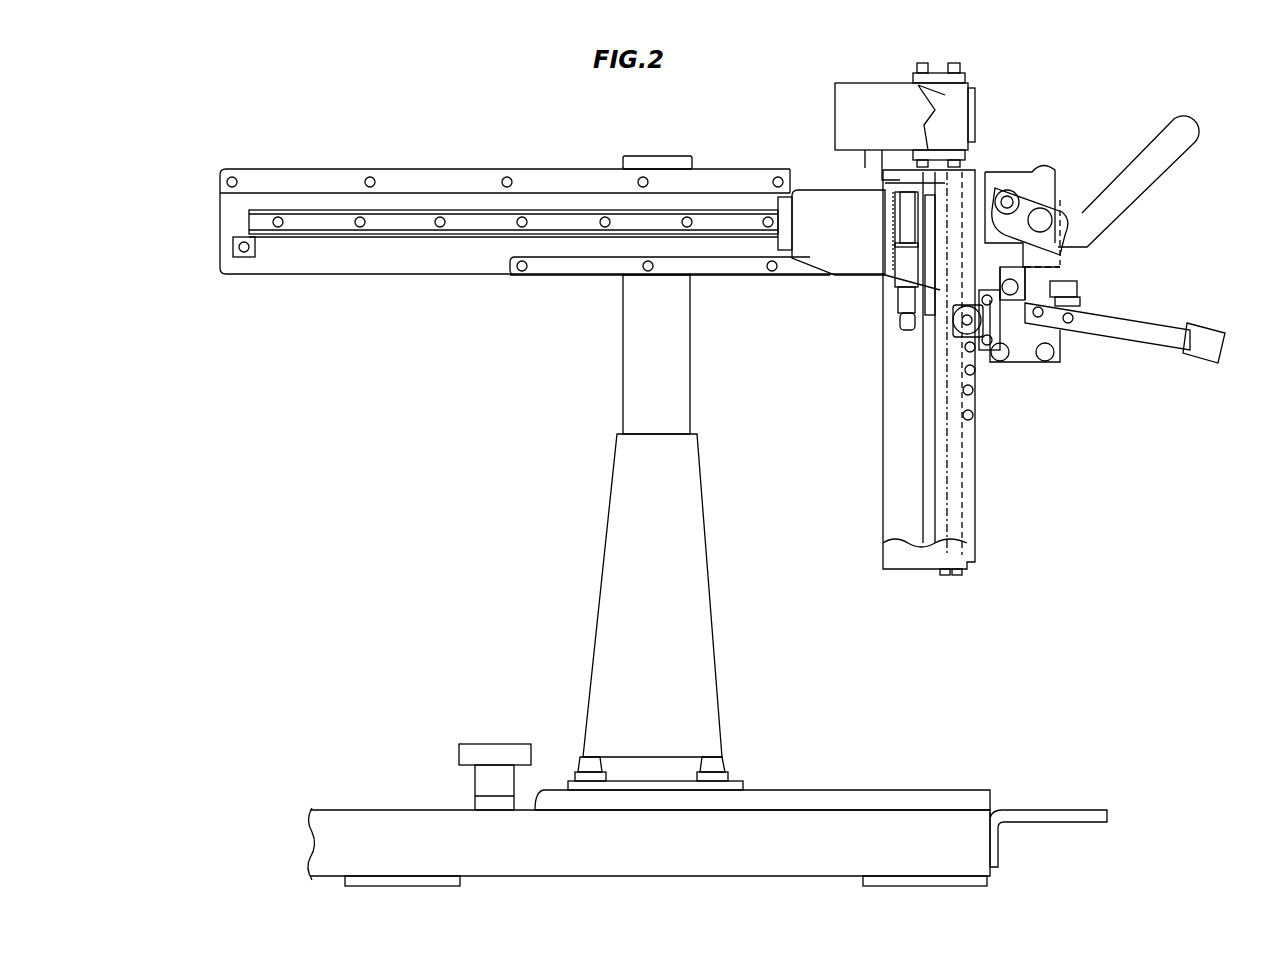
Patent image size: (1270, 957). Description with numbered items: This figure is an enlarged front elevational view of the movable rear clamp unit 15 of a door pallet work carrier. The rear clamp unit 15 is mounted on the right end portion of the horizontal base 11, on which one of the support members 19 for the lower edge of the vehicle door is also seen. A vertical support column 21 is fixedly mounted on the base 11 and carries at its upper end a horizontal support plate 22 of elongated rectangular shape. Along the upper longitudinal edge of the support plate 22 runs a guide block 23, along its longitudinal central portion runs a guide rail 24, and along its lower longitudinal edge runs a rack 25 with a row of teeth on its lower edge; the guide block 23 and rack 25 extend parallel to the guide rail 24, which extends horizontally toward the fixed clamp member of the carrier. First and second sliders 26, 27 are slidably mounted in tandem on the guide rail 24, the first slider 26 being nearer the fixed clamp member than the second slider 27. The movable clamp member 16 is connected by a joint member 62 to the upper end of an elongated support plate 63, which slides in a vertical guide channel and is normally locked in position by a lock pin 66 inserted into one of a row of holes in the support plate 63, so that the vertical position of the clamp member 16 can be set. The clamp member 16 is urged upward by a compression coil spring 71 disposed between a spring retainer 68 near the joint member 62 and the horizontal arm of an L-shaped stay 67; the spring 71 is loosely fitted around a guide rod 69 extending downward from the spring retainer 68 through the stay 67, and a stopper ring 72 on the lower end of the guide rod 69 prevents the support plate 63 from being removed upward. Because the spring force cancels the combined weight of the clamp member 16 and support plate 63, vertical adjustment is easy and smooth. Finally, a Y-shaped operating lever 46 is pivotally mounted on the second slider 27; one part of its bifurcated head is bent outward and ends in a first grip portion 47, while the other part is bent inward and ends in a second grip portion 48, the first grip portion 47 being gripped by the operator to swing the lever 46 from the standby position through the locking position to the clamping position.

The base 11 is at (347, 822).
The rear clamp unit 15 is at (228, 405).
The clamp member 16 is at (857, 118).
The support member 19 is at (485, 752).
The support column 21 is at (615, 555).
The support plate 22 is at (392, 270).
The guide block 23 is at (453, 170).
The guide rail 24 is at (477, 223).
The rack 25 is at (575, 267).
The first slider 26 is at (822, 250).
The second slider 27 is at (1038, 170).
The operating lever 46 is at (1060, 268).
The first grip portion 47 is at (1170, 152).
The second grip portion 48 is at (1200, 340).
The joint member 62 is at (988, 105).
The support plate 63 is at (968, 488).
The lock pin 66 is at (987, 343).
The L-shaped stay 67 is at (898, 256).
The spring retainer 68 is at (888, 195).
The guide rod 69 is at (890, 222).
The compression coil spring 71 is at (895, 240).
The stopper ring 72 is at (887, 330).